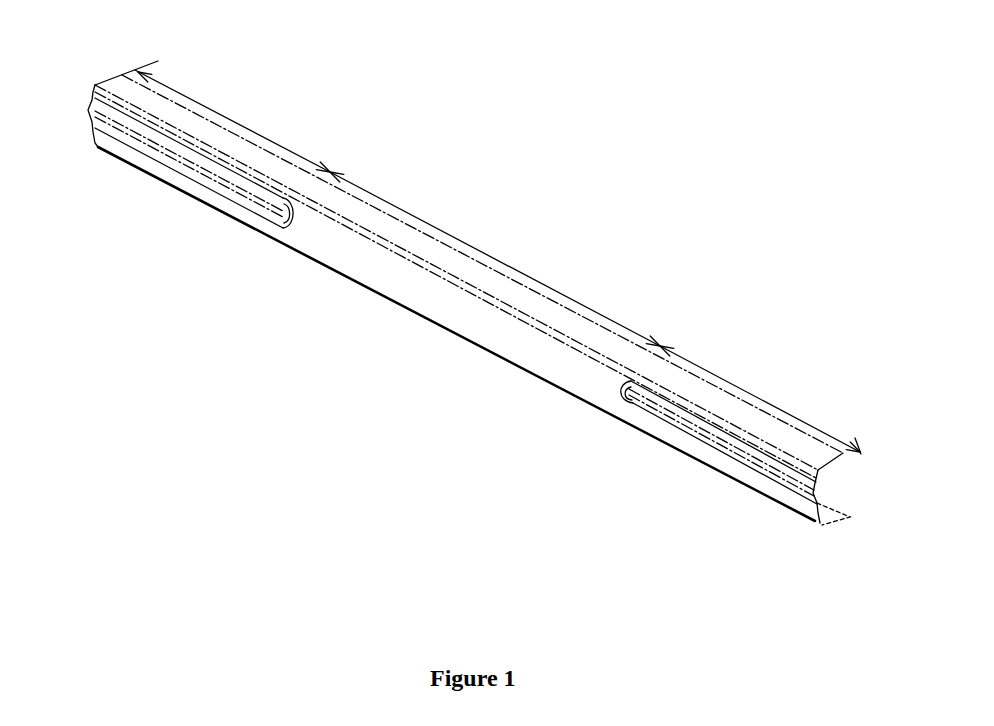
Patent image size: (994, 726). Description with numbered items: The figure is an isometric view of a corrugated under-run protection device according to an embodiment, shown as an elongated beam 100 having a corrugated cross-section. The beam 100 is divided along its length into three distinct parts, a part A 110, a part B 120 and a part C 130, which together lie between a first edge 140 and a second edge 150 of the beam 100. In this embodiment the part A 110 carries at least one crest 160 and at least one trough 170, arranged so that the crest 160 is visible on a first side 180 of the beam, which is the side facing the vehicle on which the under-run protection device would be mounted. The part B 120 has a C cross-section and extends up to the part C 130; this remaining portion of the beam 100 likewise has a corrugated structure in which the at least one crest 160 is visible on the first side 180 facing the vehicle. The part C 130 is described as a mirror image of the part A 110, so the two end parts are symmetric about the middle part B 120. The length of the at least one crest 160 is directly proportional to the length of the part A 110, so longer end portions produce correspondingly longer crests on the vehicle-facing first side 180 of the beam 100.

The beam 100 is at (350, 253).
The part A 110 is at (760, 385).
The part B 120 is at (478, 240).
The part C 130 is at (220, 112).
The first edge 140 is at (812, 520).
The second edge 150 is at (93, 92).
The crest 160 is at (153, 147).
The trough 170 is at (815, 493).
The first side 180 is at (460, 307).